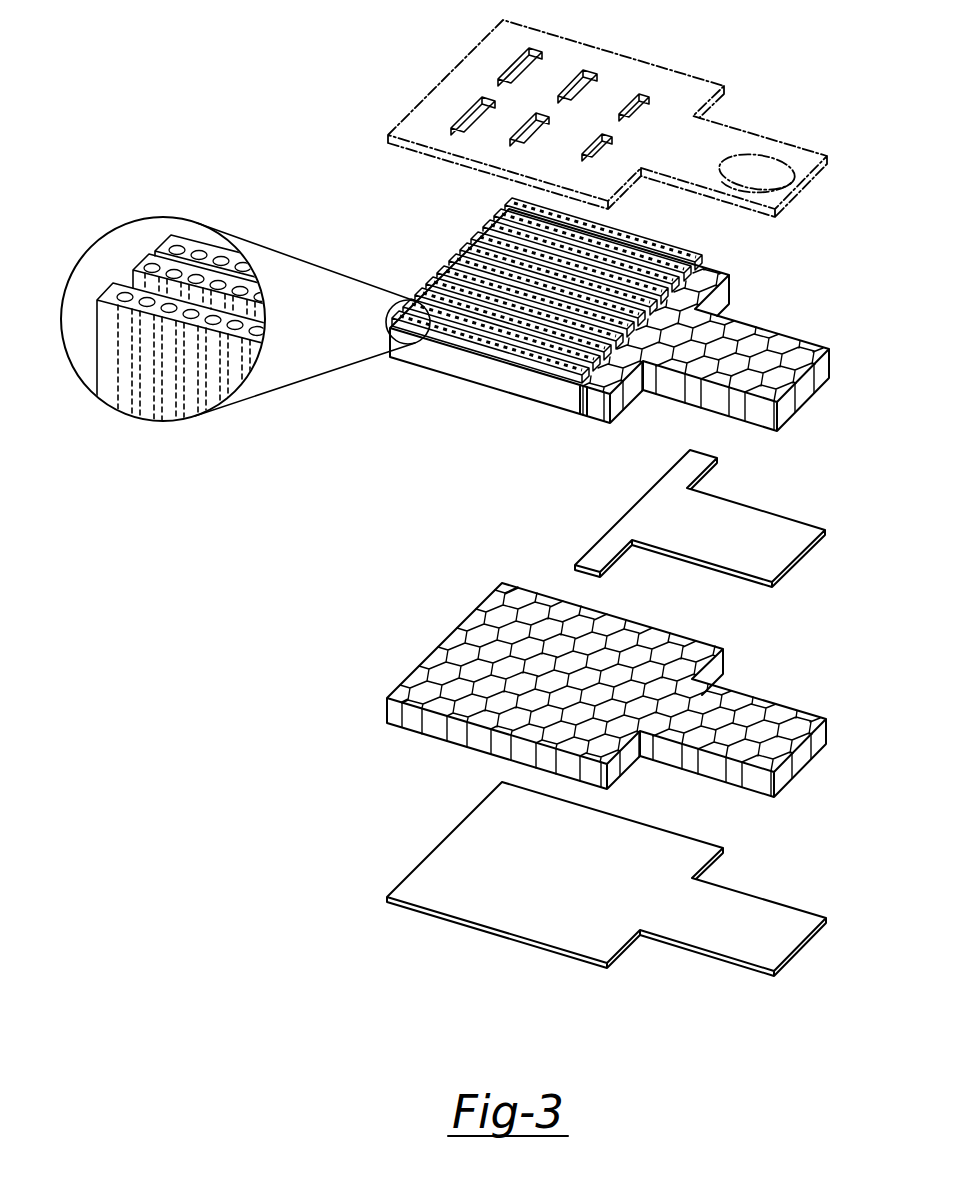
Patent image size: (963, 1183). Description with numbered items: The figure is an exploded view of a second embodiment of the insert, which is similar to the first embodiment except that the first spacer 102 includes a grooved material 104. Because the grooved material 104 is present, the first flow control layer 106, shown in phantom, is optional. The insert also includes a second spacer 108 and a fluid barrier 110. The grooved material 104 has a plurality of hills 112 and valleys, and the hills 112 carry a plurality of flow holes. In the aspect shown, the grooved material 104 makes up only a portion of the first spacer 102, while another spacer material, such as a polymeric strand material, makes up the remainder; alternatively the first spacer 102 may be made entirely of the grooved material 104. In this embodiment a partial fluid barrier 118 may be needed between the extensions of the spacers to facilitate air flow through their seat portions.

The first spacer 102 is at (817, 357).
The grooved material 104 is at (461, 264).
The first flow control layer 106 is at (803, 157).
The second spacer 108 is at (803, 730).
The fluid barrier 110 is at (795, 921).
The hills 112 is at (105, 366).
The partial fluid barrier 118 is at (802, 537).